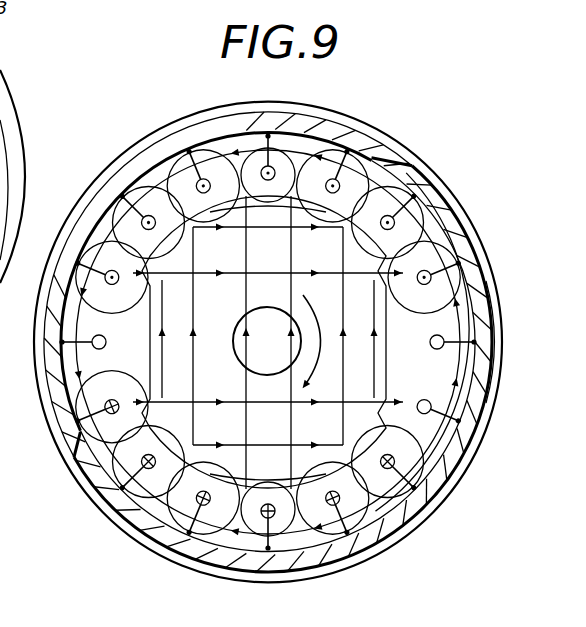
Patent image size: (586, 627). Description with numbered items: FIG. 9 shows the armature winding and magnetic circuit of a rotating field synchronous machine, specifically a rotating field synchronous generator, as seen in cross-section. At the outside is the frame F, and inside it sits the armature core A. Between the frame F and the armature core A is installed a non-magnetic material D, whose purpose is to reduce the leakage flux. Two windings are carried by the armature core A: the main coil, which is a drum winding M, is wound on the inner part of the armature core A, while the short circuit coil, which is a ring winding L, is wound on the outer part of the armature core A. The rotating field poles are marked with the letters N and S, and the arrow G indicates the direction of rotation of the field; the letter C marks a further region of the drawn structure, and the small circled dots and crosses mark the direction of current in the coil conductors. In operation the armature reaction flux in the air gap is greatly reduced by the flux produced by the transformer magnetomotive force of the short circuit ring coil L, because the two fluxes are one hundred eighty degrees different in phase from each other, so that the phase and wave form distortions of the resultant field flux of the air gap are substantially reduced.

The frame F is at (163, 128).
The armature core A is at (293, 112).
The non-magnetic material D is at (53, 370).
The short circuit coil (ring winding) L is at (492, 270).
The main coil (drum winding) M is at (93, 337).
The armature core C is at (146, 522).
The north pole N is at (268, 215).
The south pole S is at (268, 466).
The rotation direction G is at (311, 338).